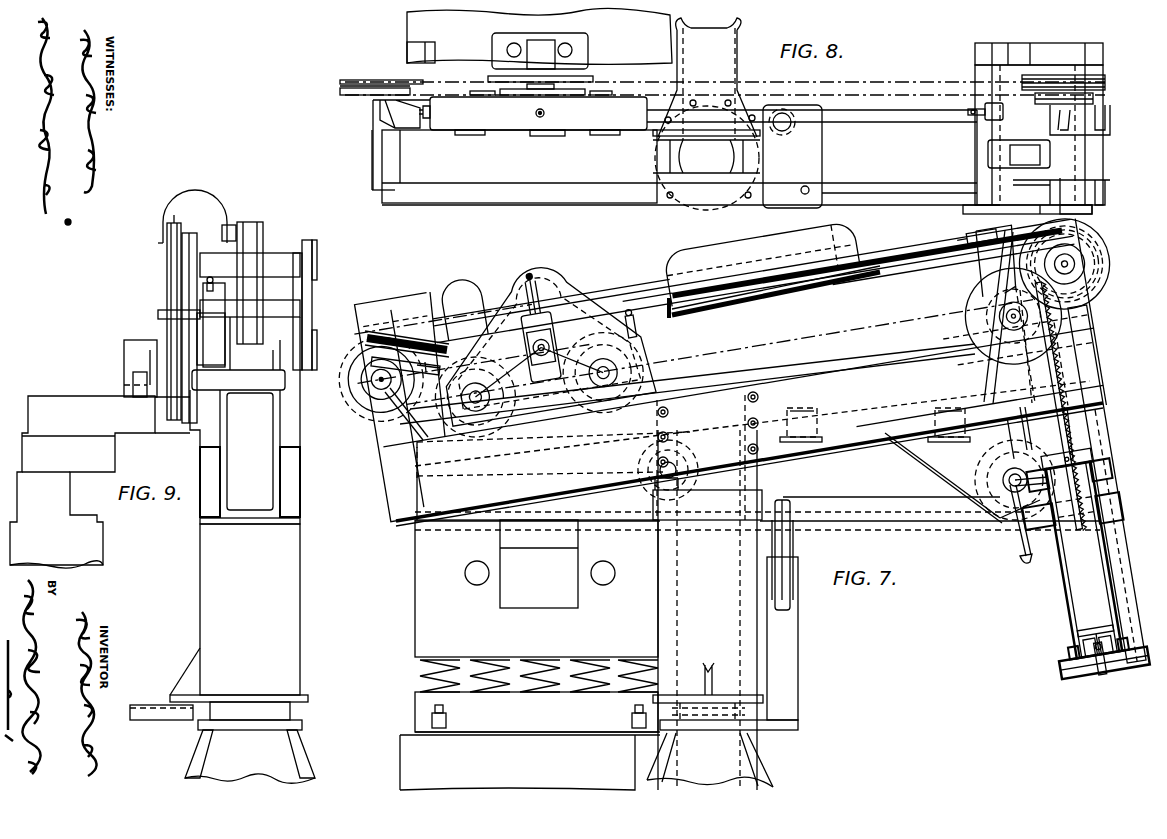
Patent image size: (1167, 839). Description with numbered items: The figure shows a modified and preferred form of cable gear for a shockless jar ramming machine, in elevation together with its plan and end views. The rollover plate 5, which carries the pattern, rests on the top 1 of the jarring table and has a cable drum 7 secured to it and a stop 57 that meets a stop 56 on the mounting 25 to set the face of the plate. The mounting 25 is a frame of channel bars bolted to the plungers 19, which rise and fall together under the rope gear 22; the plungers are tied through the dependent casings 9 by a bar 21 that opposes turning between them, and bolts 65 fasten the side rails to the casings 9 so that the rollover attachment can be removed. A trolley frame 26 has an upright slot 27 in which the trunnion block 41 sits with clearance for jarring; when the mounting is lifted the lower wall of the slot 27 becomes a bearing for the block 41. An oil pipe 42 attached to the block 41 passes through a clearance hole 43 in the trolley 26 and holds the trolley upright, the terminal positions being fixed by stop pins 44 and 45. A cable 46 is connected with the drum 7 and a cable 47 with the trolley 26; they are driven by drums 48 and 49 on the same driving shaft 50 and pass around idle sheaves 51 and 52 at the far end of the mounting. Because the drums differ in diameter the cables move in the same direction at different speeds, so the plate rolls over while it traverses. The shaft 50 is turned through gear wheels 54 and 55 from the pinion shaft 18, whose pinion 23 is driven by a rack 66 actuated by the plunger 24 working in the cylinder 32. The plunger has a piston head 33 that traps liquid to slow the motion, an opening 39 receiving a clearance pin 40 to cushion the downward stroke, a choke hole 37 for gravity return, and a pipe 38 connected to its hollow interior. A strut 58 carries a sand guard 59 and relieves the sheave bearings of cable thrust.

In FIG. 7, the table top 1 is at (669, 437).
In FIG. 7, the rollover plate 5 is at (669, 412).
In FIG. 8, the cable drum 7 is at (580, 40).
In FIG. 9, the cable drum 7 is at (160, 313).
In FIG. 9, the dependent casing 9 is at (200, 586).
In FIG. 7, the dependent casing 9 is at (757, 663).
In FIG. 7, the pinion shaft 18 is at (1008, 318).
In FIG. 7, the plunger 19 is at (677, 627).
In FIG. 9, the bar 21 is at (160, 708).
In FIG. 7, the rope gear 22 is at (798, 645).
In FIG. 7, the pinion 23 is at (1030, 318).
In FIG. 7, the plunger 24 is at (1064, 595).
In FIG. 7, the mounting 25 is at (875, 420).
In FIG. 8, the trolley frame 26 is at (538, 116).
In FIG. 7, the trolley frame 26 is at (625, 352).
In FIG. 7, the upright slot 27 is at (566, 321).
In FIG. 7, the cylinder 32 is at (1060, 620).
In FIG. 7, the piston head 33 is at (1072, 660).
In FIG. 7, the choke hole 37 is at (1074, 642).
In FIG. 7, the pipe 38 is at (1020, 540).
In FIG. 7, the opening 39 is at (1106, 668).
In FIG. 7, the clearance pin 40 is at (1092, 676).
In FIG. 7, the trunnion block 41 is at (572, 336).
In FIG. 7, the oil pipe 42 is at (552, 288).
In FIG. 7, the clearance hole 43 is at (566, 306).
In FIG. 8, the stop pin 44 is at (430, 100).
In FIG. 7, the stop pin 44 is at (430, 300).
In FIG. 8, the stop pin 45 is at (975, 109).
In FIG. 7, the stop pin 45 is at (985, 282).
In FIG. 8, the cable 46 is at (874, 83).
In FIG. 7, the cable 46 is at (948, 244).
In FIG. 8, the cable 47 is at (912, 95).
In FIG. 7, the cable 47 is at (668, 315).
In FIG. 8, the drum 48 is at (1105, 80).
In FIG. 9, the drum 48 is at (177, 309).
In FIG. 7, the drum 48 is at (1090, 242).
In FIG. 8, the drum 49 is at (1093, 101).
In FIG. 9, the drum 49 is at (190, 238).
In FIG. 7, the drum 49 is at (1105, 265).
In FIG. 7, the driving shaft 50 is at (1073, 262).
In FIG. 8, the idle sheave 51 is at (360, 80).
In FIG. 7, the idle sheave 51 is at (365, 338).
In FIG. 8, the idle sheave 52 is at (345, 92).
In FIG. 7, the idle sheave 52 is at (356, 398).
In FIG. 8, the gear wheel 54 is at (963, 211).
In FIG. 9, the gear wheel 54 is at (310, 290).
In FIG. 7, the gear wheel 54 is at (1000, 323).
In FIG. 8, the gear wheel 55 is at (1105, 208).
In FIG. 9, the gear wheel 55 is at (308, 242).
In FIG. 7, the gear wheel 55 is at (1105, 276).
In FIG. 8, the stop 56 is at (975, 52).
In FIG. 7, the stop 56 is at (1000, 280).
In FIG. 8, the stop 57 is at (407, 50).
In FIG. 7, the strut 58 is at (745, 308).
In FIG. 7, the sand guard 59 is at (748, 247).
In FIG. 7, the bolt 65 is at (690, 495).
In FIG. 7, the rack 66 is at (1070, 360).